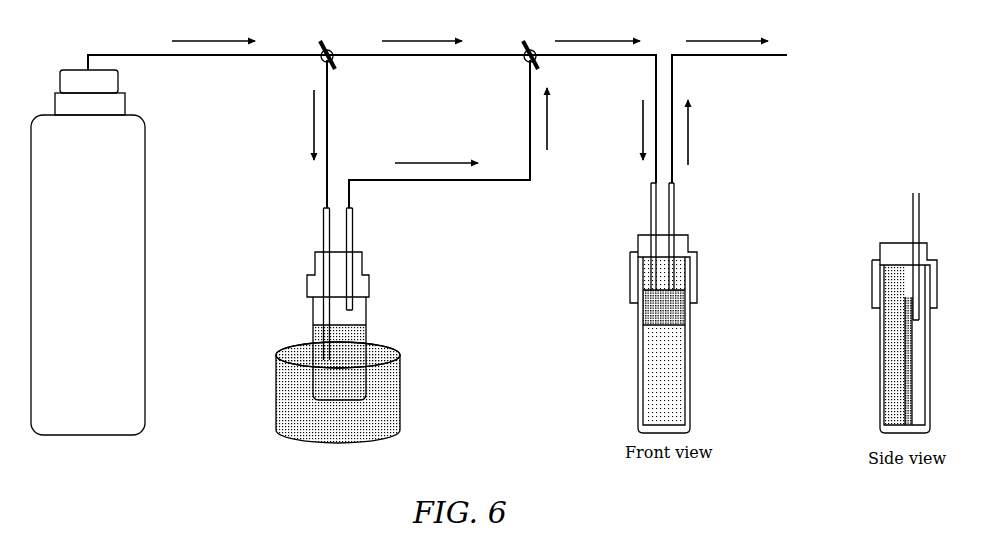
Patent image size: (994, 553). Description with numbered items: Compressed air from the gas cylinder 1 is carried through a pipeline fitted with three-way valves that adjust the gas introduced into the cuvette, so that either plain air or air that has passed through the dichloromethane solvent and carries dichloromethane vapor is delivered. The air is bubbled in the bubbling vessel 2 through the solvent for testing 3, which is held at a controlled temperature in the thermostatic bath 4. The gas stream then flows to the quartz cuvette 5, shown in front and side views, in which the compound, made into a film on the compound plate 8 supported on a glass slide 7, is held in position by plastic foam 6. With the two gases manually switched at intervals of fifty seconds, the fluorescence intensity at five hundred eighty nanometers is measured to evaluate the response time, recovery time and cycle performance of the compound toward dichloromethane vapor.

The compressed air cylinder 1 is at (88, 252).
The bubbling vessel 2 is at (360, 327).
The solvent for testing 3 is at (340, 367).
The thermostatic bath 4 is at (373, 400).
The quartz cuvette 5 is at (880, 290).
The plastic foam 6 is at (895, 328).
The glass slide 7 is at (903, 362).
The MOF plate 8 is at (902, 412).